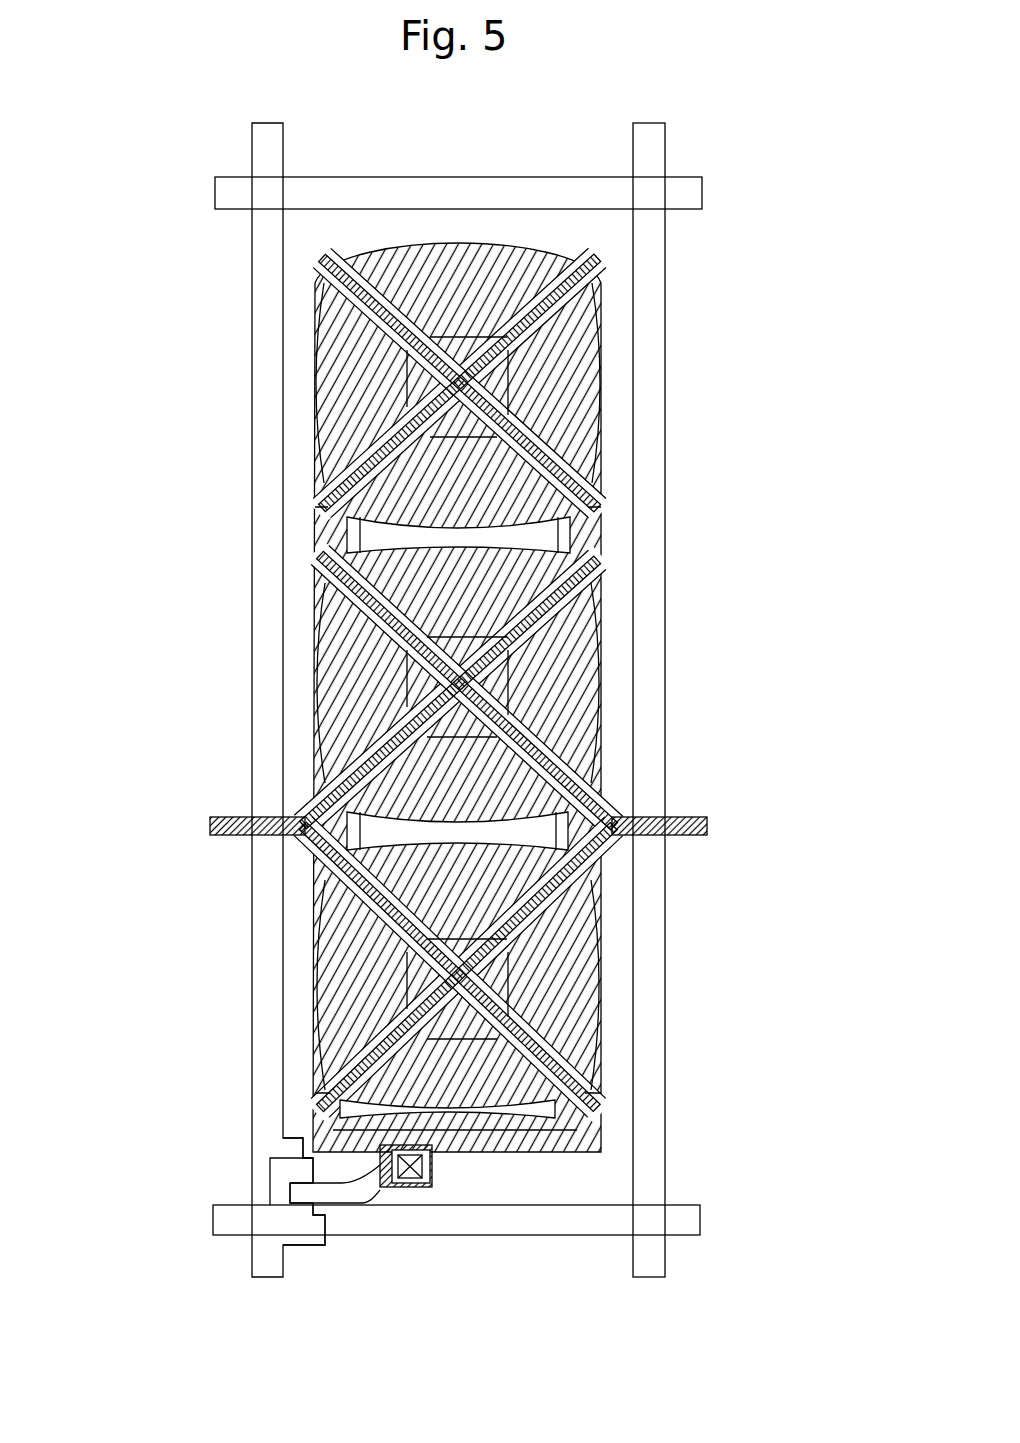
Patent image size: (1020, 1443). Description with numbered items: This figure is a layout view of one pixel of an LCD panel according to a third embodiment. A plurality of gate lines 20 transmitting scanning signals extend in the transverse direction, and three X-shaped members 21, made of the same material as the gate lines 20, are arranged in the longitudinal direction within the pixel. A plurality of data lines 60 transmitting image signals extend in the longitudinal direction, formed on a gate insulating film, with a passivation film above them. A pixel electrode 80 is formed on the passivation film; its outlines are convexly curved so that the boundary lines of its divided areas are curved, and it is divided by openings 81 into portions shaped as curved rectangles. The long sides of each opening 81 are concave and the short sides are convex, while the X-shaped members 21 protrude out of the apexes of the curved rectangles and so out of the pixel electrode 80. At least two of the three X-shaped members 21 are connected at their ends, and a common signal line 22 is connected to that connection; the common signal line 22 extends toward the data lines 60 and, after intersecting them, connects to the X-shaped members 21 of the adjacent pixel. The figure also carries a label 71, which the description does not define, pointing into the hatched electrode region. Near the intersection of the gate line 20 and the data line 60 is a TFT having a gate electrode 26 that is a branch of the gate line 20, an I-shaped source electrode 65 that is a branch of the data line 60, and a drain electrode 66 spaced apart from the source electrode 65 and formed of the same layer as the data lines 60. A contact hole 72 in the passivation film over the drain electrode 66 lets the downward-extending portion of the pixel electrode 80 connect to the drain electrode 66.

The gate line 20 is at (447, 1236).
The X-shaped member 21 is at (548, 470).
The common signal line 22 is at (232, 817).
The gate electrode 26 is at (268, 1190).
The data line 60 is at (250, 866).
The source electrode 65 is at (318, 1246).
The drain electrode 66 is at (372, 1195).
The pixel electrode 71 is at (525, 982).
The contact hole 72 is at (432, 1166).
The pixel electrode 80 is at (313, 980).
The opening 81 is at (592, 805).